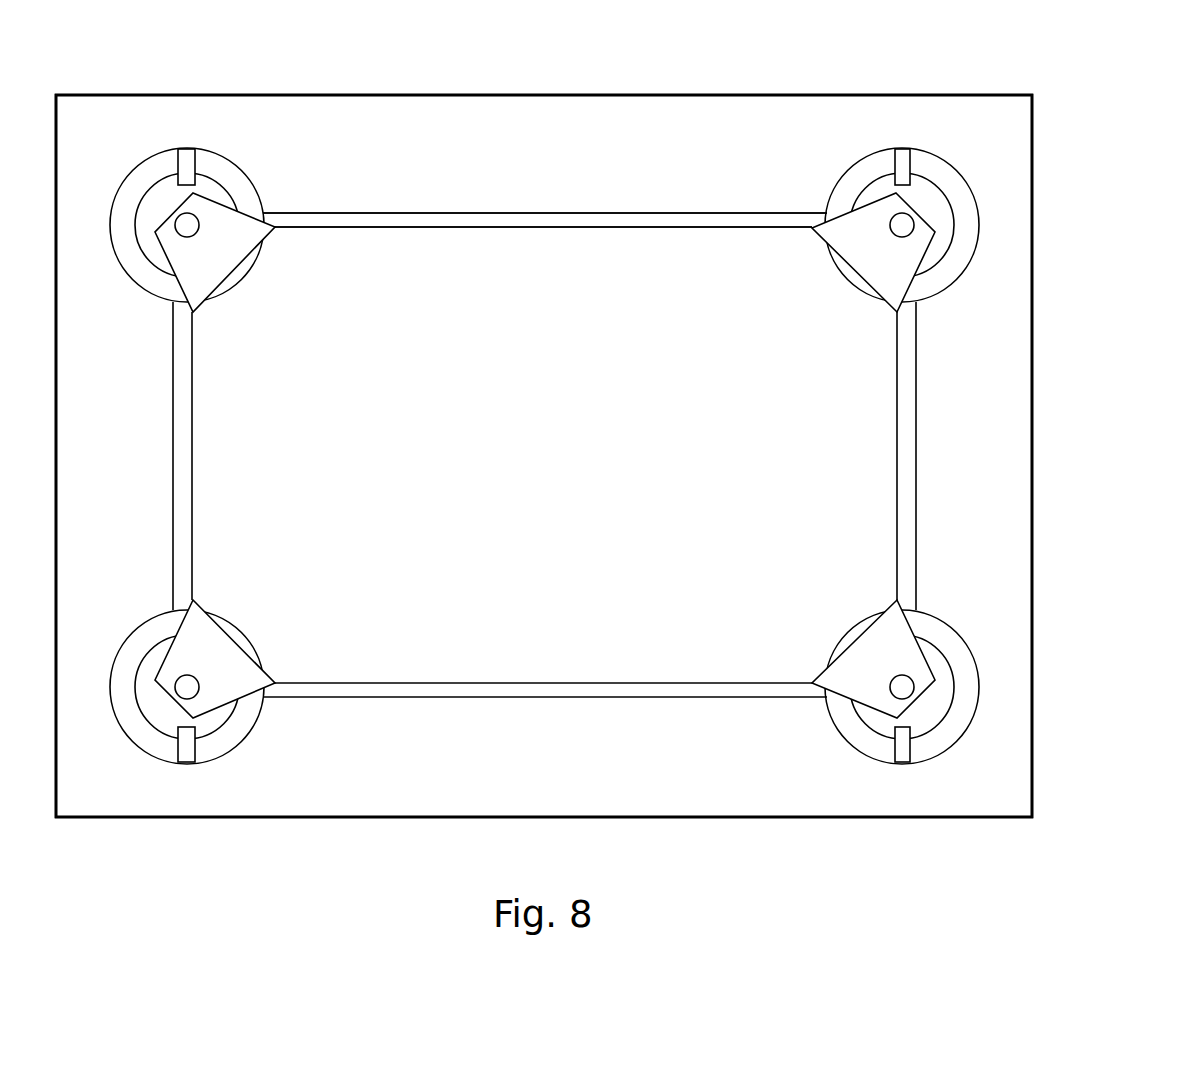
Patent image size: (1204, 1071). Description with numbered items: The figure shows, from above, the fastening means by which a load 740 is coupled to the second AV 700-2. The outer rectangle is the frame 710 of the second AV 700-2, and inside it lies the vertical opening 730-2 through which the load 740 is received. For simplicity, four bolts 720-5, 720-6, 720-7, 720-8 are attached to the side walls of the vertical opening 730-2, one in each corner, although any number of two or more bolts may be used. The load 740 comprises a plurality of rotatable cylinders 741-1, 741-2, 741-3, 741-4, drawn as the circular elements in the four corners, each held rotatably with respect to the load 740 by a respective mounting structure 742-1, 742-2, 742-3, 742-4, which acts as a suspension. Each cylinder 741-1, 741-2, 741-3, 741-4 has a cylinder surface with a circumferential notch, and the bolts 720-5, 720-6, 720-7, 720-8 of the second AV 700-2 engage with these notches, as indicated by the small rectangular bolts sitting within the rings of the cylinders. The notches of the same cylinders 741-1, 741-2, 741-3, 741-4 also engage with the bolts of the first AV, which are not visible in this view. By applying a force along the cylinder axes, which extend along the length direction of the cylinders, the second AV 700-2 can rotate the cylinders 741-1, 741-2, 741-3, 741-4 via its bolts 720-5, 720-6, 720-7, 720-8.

The second AV 700-2 is at (1033, 473).
The frame 710 is at (1033, 568).
The bolt 720-5 is at (902, 158).
The bolt 720-6 is at (187, 158).
The bolt 720-7 is at (898, 755).
The bolt 720-8 is at (188, 755).
The vertical opening 730-2 is at (597, 227).
The load 740 is at (897, 403).
The rotatable cylinder 741-1 is at (957, 222).
The rotatable cylinder 741-2 is at (230, 183).
The rotatable cylinder 741-3 is at (957, 688).
The rotatable cylinder 741-4 is at (227, 733).
The mounting structure 742-1 is at (862, 267).
The mounting structure 742-2 is at (227, 263).
The mounting structure 742-3 is at (847, 652).
The mounting structure 742-4 is at (227, 648).